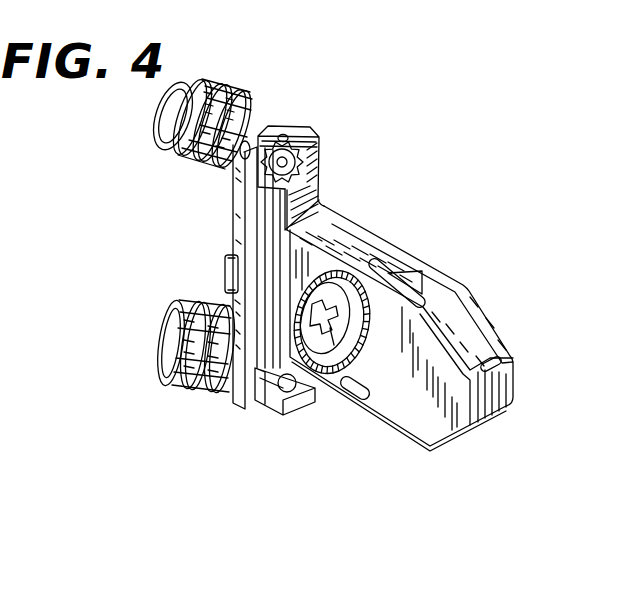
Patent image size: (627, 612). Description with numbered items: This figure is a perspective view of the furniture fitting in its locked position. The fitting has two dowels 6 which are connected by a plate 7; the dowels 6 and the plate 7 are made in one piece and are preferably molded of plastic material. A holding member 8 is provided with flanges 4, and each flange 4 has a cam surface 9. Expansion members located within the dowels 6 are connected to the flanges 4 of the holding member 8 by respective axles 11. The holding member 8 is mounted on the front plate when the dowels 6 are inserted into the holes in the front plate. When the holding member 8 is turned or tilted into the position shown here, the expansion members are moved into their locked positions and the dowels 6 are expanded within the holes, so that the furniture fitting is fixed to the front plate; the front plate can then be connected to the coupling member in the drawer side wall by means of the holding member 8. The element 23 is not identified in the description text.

The flange 4 is at (287, 128).
The dowel 6 is at (183, 115).
The plate 7 is at (240, 220).
The holding member 8 is at (355, 240).
The cam surface 9 is at (238, 148).
The axle 11 is at (310, 132).
The hook 23 is at (503, 370).